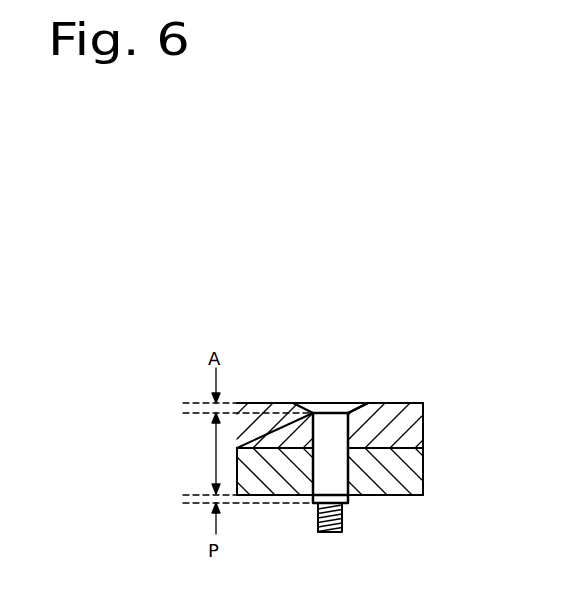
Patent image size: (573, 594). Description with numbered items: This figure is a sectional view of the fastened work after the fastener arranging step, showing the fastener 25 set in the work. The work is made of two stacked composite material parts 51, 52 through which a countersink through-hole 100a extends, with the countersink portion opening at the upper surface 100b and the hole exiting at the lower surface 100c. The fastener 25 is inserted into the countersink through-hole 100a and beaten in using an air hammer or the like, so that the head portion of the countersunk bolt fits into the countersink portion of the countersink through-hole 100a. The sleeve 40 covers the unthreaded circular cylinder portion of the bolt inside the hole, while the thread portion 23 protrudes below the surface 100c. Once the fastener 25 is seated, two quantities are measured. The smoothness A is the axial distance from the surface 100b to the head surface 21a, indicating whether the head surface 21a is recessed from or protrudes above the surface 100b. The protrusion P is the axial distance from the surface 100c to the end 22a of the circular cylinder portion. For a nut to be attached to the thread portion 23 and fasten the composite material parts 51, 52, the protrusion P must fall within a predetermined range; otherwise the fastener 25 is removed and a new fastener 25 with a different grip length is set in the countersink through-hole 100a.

The fastener 25 is at (309, 382).
The sleeve 40 is at (335, 451).
The head surface 21a is at (330, 410).
The end of the circular cylinder portion 22a is at (348, 500).
The thread portion 23 is at (318, 517).
The composite material part 51 is at (425, 423).
The composite material part 52 is at (425, 470).
The countersink through-hole 100a is at (360, 386).
The surface 100b is at (397, 402).
The surface 100c is at (415, 496).